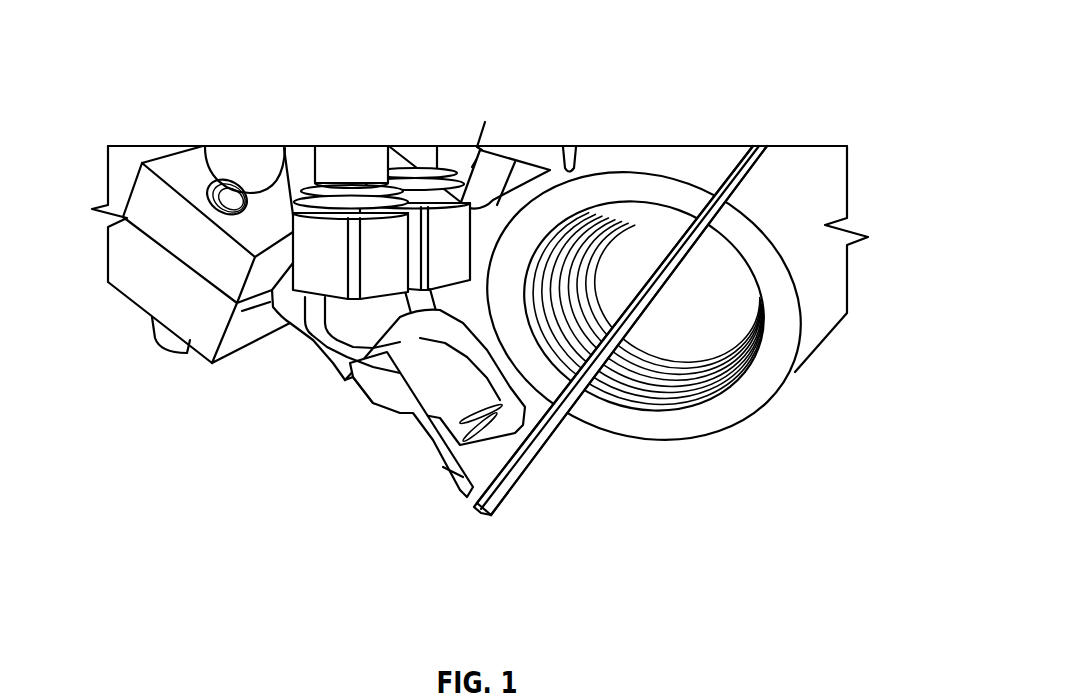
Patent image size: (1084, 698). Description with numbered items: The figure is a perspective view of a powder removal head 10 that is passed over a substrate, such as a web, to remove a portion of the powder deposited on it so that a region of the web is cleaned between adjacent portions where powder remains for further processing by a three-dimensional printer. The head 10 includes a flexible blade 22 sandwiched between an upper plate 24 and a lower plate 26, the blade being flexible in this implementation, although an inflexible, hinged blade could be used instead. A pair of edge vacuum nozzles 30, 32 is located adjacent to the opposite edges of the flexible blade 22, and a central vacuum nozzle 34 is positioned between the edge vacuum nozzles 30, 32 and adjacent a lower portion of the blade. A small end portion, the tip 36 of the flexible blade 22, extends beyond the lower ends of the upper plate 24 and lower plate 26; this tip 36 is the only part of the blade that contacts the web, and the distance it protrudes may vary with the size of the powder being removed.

The powder removal head 10 is at (480, 302).
The flexible blade 22 is at (717, 333).
The upper plate 24 is at (653, 263).
The lower plate 26 is at (543, 443).
The edge vacuum nozzle 30 is at (447, 457).
The edge vacuum nozzle 32 is at (350, 372).
The central vacuum nozzle 34 is at (363, 390).
The tip 36 is at (485, 512).